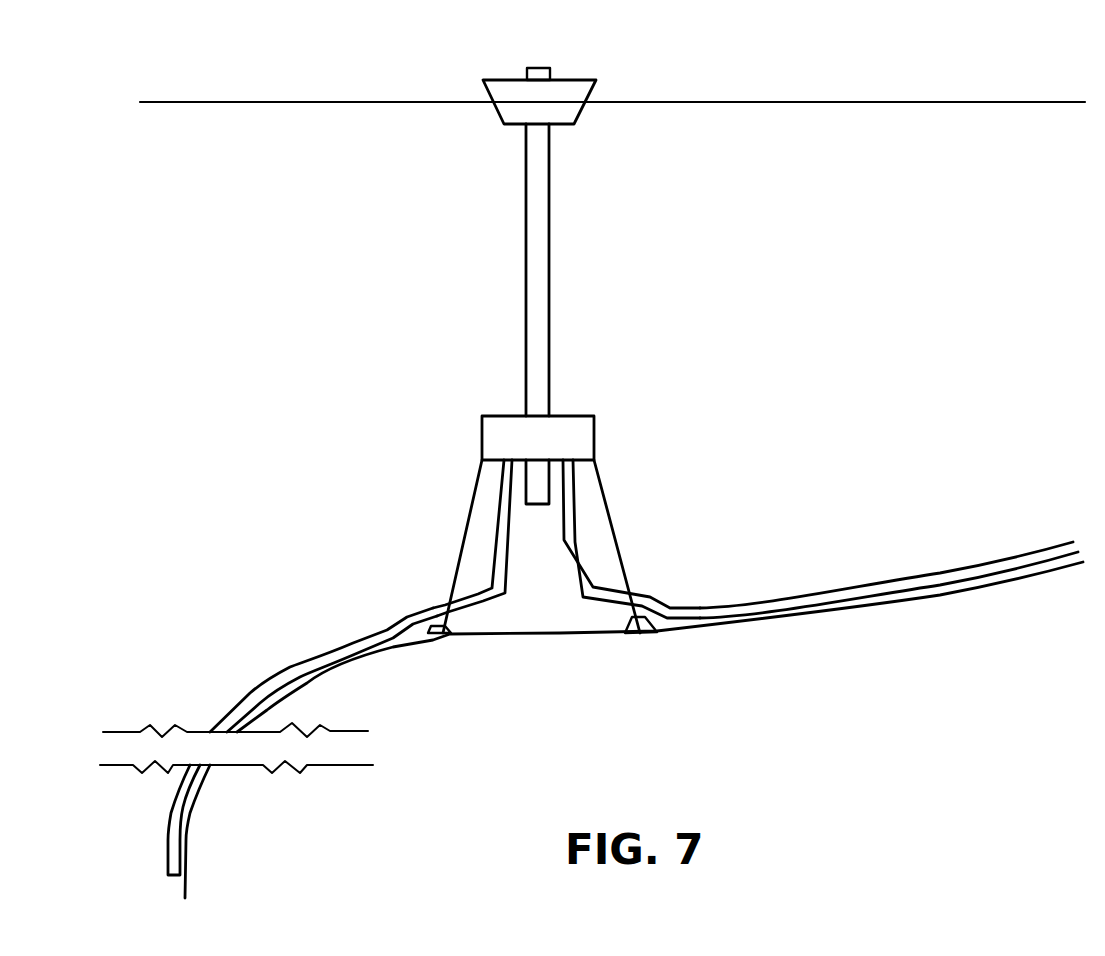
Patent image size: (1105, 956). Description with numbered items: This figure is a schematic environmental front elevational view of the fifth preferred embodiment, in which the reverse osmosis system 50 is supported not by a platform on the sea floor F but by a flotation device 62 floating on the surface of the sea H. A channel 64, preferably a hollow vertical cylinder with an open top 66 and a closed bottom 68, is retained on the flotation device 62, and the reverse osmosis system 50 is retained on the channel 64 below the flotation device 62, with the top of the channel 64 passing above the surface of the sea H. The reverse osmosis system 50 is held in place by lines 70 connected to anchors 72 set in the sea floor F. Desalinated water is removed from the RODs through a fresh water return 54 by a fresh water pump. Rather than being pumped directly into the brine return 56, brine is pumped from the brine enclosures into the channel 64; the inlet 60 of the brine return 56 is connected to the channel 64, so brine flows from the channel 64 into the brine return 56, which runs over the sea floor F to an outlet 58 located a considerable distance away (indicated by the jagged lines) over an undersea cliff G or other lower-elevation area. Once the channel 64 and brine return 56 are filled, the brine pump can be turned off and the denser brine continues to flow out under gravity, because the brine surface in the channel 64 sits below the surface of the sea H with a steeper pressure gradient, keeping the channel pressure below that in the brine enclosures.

The reverse osmosis system 50 is at (482, 416).
The fresh water return 54 is at (886, 580).
The brine return 56 is at (394, 620).
The outlet 58 is at (168, 877).
The inlet 60 is at (505, 462).
The flotation device 62 is at (484, 80).
The channel 64 is at (549, 245).
The open top 66 is at (540, 68).
The closed bottom 68 is at (537, 506).
The lines 70 is at (462, 548).
The anchors 72 is at (440, 637).
The surface of the sea H is at (774, 100).
The sea floor F is at (848, 616).
The undersea cliff G is at (192, 837).